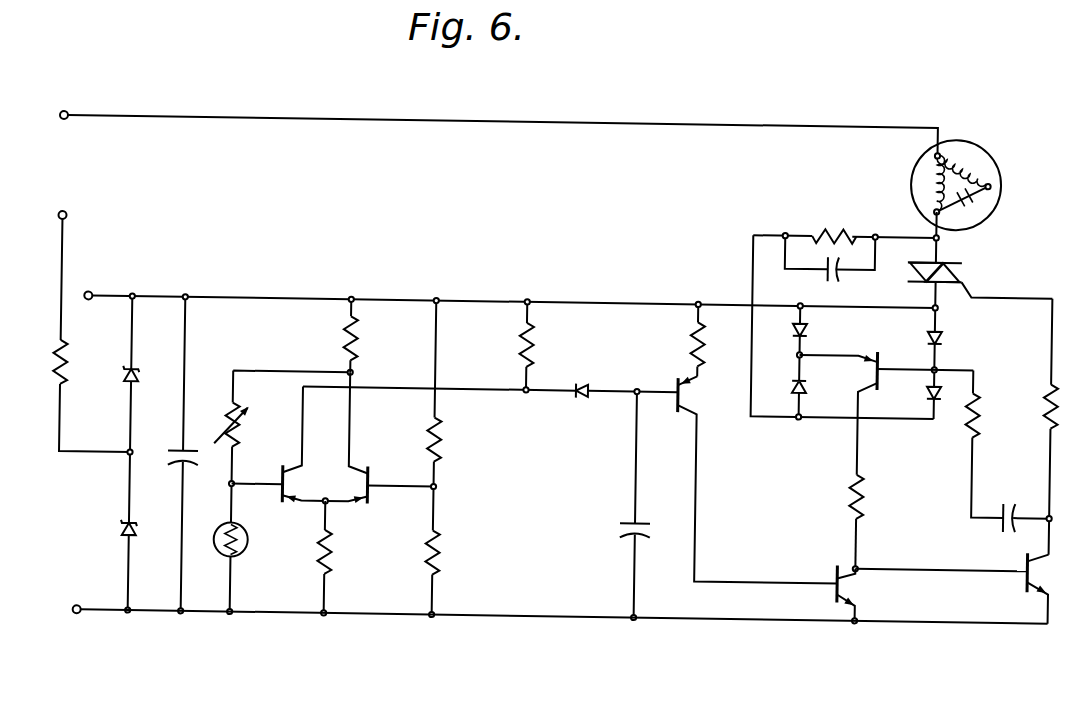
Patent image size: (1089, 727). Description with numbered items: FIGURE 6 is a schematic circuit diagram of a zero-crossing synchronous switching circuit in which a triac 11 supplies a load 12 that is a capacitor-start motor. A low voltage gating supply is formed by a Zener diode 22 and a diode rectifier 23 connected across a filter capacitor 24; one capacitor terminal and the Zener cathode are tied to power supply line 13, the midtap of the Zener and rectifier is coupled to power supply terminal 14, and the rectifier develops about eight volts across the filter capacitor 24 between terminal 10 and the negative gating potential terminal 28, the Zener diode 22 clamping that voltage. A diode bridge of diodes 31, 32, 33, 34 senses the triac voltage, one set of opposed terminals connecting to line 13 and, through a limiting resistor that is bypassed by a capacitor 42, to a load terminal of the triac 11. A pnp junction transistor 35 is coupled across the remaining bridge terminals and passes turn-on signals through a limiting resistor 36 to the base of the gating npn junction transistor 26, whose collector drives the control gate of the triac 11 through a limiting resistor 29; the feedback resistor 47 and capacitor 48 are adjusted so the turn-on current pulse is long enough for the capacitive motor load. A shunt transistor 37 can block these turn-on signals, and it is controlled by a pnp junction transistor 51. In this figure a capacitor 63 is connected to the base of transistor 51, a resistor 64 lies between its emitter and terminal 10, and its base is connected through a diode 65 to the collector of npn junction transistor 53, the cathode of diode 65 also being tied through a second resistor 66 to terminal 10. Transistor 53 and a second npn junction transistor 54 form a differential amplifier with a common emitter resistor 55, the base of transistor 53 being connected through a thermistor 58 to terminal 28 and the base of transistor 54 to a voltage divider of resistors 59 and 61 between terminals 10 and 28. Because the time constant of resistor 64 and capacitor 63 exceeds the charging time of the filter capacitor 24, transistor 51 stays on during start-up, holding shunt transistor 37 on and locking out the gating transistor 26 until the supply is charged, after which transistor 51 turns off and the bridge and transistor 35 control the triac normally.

The terminal 10 is at (263, 294).
The triac 11 is at (958, 257).
The load 12 is at (913, 158).
The power supply line 13 is at (64, 258).
The power supply terminal 14 is at (259, 114).
The Zener diode 22 is at (139, 365).
The diode rectifier 23 is at (139, 521).
The filter capacitor 24 is at (173, 452).
The npn junction transistor 26 is at (1031, 544).
The low voltage direct current gating potential terminal 28 is at (388, 611).
The limiting resistor 29 is at (1049, 390).
The diode 31 is at (810, 325).
The diode 32 is at (796, 373).
The diode 33 is at (945, 323).
The diode 34 is at (930, 385).
The pnp junction transistor 35 is at (881, 352).
The limiting resistor 36 is at (856, 487).
The transistor 37 is at (841, 587).
The capacitor 42 is at (825, 270).
The feedback resistor 47 is at (971, 416).
The capacitor 48 is at (1008, 492).
The pnp junction transistor 51 is at (680, 398).
The npn junction transistor 53 is at (286, 468).
The npn junction transistor 54 is at (374, 470).
The common emitter resistor 55 is at (338, 553).
The thermistor 58 is at (254, 534).
The voltage dividing resistor 59 is at (446, 433).
The voltage dividing resistor 61 is at (447, 546).
The capacitor 63 is at (629, 513).
The resistor 64 is at (695, 327).
The diode 65 is at (581, 390).
The second resistor 66 is at (522, 334).